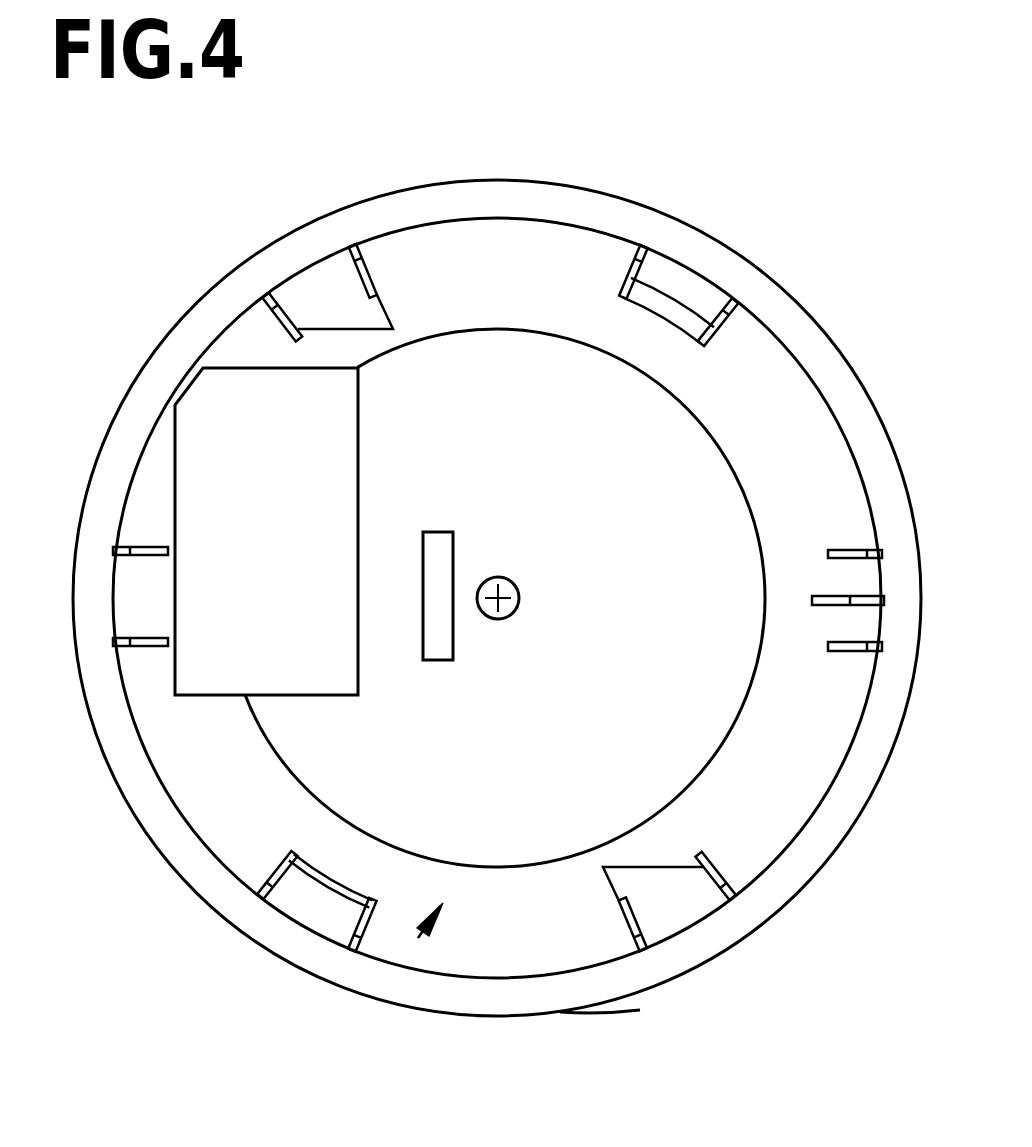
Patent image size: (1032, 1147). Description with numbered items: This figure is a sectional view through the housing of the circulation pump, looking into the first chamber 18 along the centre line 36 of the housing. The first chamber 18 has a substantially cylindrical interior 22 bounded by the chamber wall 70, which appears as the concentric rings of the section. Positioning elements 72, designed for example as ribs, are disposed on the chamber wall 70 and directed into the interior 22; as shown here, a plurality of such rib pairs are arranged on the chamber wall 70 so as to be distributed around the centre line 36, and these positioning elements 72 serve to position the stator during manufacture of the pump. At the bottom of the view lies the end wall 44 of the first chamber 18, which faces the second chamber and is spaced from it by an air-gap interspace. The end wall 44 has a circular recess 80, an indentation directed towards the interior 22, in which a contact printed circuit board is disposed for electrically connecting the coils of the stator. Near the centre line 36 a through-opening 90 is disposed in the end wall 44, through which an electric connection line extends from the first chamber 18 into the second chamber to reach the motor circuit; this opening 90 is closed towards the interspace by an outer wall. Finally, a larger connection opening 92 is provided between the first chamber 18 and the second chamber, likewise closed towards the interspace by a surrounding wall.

The first chamber 18 is at (418, 938).
The interior 22 is at (594, 232).
The centre line 36 is at (508, 616).
The end wall 44 is at (568, 948).
The chamber wall 70 is at (212, 890).
The positioning elements 72 is at (145, 647).
The recess 80 is at (683, 738).
The through-opening 90 is at (445, 538).
The connection opening 92 is at (242, 390).